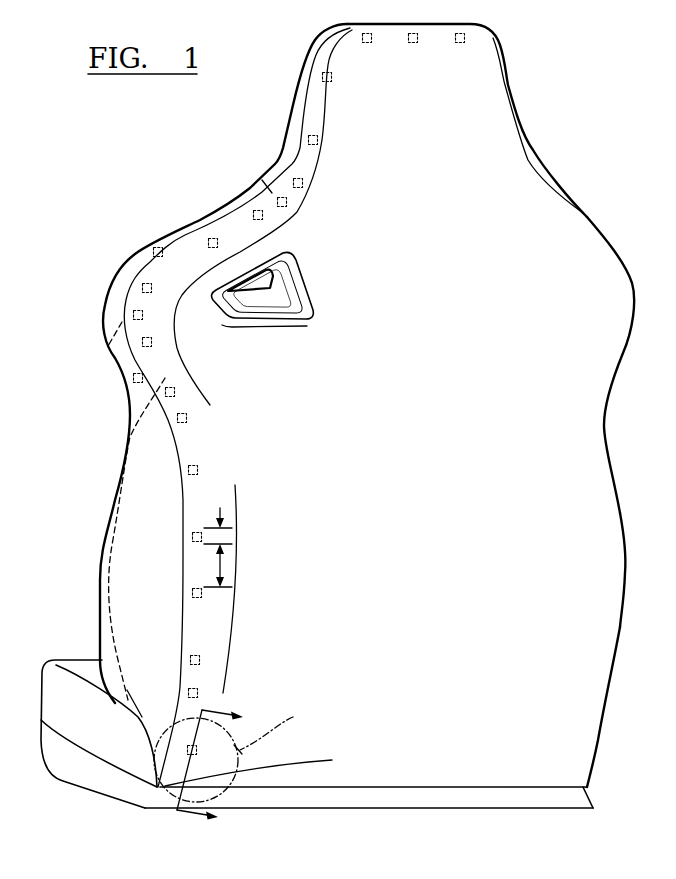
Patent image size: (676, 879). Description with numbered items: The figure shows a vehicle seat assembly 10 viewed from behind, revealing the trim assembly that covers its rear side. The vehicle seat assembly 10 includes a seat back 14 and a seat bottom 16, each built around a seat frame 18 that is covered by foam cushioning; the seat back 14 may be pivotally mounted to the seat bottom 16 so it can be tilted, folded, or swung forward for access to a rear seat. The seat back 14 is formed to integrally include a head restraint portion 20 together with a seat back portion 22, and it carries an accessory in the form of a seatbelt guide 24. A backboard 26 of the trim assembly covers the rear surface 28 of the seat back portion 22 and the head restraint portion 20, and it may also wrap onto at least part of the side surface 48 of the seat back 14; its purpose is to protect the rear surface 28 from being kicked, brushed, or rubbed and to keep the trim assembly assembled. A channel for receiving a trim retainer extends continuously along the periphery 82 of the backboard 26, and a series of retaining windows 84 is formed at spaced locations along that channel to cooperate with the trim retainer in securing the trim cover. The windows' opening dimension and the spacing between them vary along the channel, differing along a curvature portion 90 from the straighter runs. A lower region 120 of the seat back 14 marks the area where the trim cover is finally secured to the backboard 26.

The vehicle seat assembly 10 is at (139, 182).
The seat back 14 is at (587, 437).
The seat bottom 16 is at (80, 667).
The seat frame 18 is at (93, 777).
The head restraint portion 20 is at (487, 100).
The seat back portion 22 is at (595, 628).
The seatbelt guide 24 is at (250, 280).
The backboard 26 is at (570, 578).
The rear surface 28 is at (408, 493).
The side surface 48 is at (168, 547).
The periphery 82 is at (300, 148).
The retaining windows 84 is at (322, 75).
The curvature portion 90 is at (122, 313).
The lower region 120 is at (557, 760).